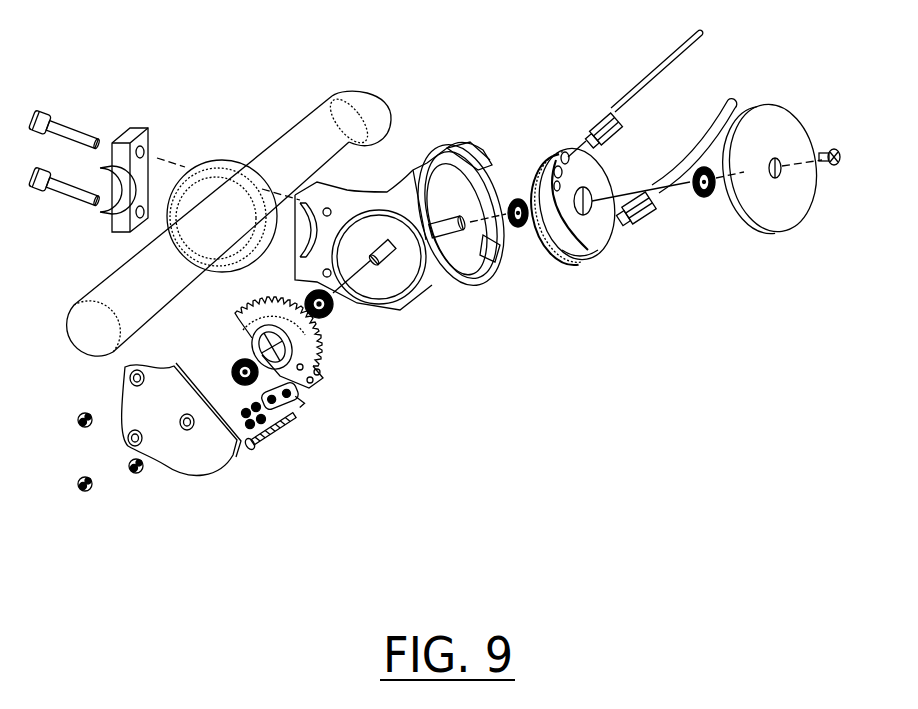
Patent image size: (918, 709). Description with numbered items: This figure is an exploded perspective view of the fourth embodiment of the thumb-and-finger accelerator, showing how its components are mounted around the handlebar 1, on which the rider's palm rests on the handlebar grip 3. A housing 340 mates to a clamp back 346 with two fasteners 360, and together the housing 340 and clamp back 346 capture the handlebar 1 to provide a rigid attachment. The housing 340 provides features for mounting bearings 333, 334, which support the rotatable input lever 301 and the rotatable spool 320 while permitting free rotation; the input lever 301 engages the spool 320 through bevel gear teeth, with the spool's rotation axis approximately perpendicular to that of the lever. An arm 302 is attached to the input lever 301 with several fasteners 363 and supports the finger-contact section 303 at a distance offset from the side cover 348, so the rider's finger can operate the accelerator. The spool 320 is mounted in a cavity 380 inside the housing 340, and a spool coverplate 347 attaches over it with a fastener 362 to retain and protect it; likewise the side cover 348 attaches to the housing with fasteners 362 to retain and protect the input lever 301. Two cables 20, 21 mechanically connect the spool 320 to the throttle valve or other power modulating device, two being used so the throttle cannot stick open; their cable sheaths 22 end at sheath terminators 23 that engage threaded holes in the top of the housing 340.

The handlebar 1 is at (332, 102).
The handlebar grip 3 is at (125, 273).
The cable 20 is at (577, 148).
The cable 21 is at (618, 234).
The cable sheath 22 is at (690, 50).
The sheath terminator 23 is at (607, 108).
The input lever 301 is at (308, 356).
The arm 302 is at (292, 412).
The finger-contact section 303 is at (262, 440).
The spool 320 is at (583, 233).
The bearing 333 is at (338, 310).
The bearing 334 is at (516, 228).
The housing 340 is at (421, 165).
The clamp back 346 is at (135, 128).
The spool coverplate 347 is at (787, 213).
The side cover 348 is at (205, 457).
The fastener 360 is at (50, 178).
The fastener 362 is at (83, 426).
The fastener 363 is at (282, 425).
The cavity 380 is at (448, 202).